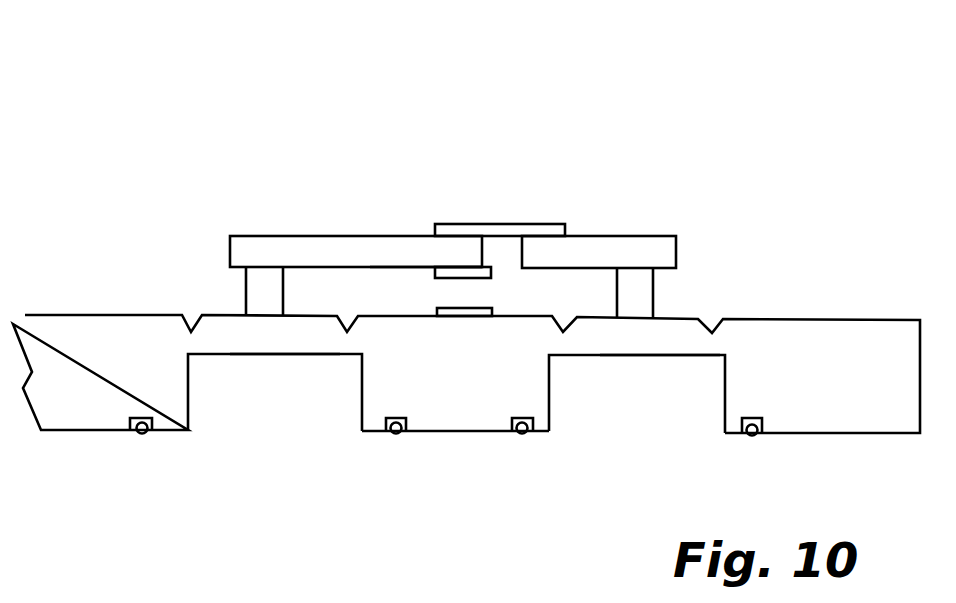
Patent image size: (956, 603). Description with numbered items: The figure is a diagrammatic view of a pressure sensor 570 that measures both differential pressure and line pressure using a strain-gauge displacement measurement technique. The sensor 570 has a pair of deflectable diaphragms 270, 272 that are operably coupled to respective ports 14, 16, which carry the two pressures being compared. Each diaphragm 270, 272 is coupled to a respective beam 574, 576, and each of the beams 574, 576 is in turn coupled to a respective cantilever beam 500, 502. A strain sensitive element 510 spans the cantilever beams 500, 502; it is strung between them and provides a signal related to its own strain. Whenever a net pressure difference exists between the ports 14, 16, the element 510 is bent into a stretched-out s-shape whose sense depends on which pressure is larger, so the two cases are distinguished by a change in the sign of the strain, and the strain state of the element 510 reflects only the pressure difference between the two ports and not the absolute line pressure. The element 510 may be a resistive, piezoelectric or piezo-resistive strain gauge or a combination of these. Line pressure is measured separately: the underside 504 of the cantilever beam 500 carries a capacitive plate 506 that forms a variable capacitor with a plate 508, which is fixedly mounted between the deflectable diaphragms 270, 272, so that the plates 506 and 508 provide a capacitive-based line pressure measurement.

The pressure sensor 570 is at (792, 173).
The cantilever beam 500 is at (324, 236).
The cantilever beam 502 is at (603, 236).
The underside of beam 504 is at (378, 270).
The capacitive plate 506 is at (492, 275).
The plate 508 is at (492, 312).
The strain sensitive element 510 is at (495, 224).
The beam 574 is at (246, 293).
The beam 576 is at (653, 303).
The deflectable diaphragm 270 is at (308, 355).
The deflectable diaphragm 272 is at (703, 356).
The port 14 is at (286, 421).
The port 16 is at (648, 423).